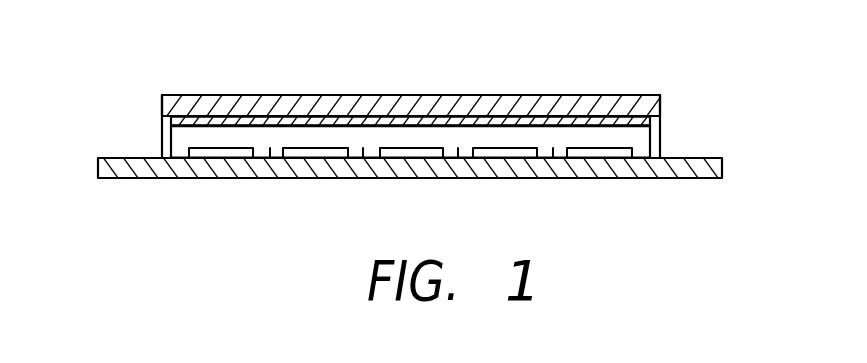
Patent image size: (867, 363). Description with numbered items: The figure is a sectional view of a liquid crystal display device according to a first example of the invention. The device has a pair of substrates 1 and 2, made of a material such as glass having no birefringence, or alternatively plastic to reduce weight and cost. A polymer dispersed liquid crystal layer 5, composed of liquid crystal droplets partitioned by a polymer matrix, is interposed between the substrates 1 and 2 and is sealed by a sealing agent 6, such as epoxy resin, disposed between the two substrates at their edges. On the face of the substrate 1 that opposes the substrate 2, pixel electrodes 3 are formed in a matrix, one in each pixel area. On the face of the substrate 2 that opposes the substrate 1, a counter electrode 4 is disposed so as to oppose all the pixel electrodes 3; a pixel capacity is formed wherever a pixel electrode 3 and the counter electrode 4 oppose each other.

The substrate 1 is at (188, 178).
The substrate 2 is at (510, 95).
The pixel electrode 3 is at (242, 160).
The counter electrode 4 is at (660, 113).
The polymer dispersed liquid crystal layer 5 is at (178, 153).
The sealing agent 6 is at (162, 122).